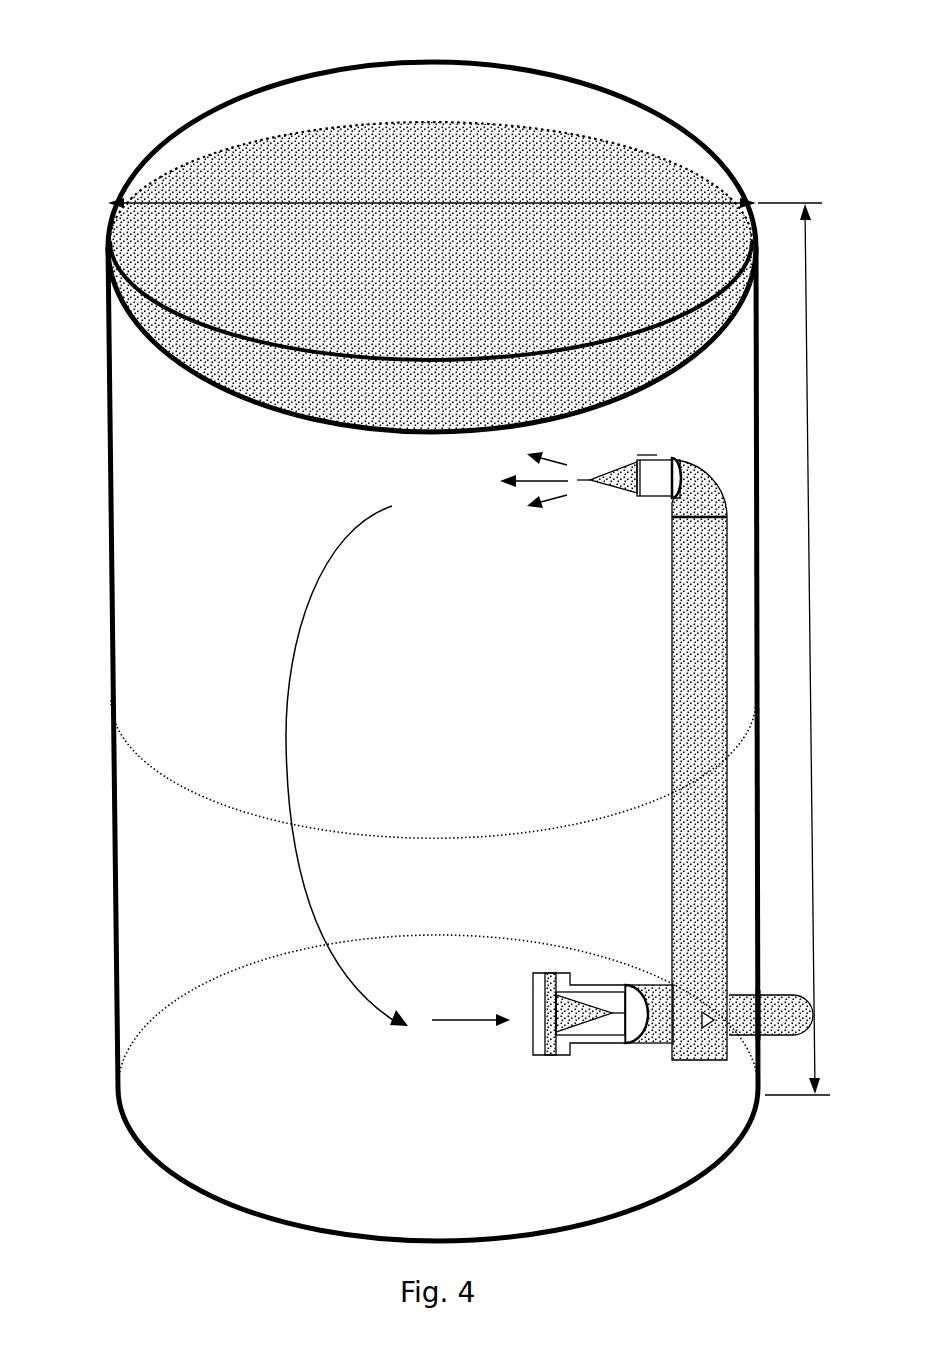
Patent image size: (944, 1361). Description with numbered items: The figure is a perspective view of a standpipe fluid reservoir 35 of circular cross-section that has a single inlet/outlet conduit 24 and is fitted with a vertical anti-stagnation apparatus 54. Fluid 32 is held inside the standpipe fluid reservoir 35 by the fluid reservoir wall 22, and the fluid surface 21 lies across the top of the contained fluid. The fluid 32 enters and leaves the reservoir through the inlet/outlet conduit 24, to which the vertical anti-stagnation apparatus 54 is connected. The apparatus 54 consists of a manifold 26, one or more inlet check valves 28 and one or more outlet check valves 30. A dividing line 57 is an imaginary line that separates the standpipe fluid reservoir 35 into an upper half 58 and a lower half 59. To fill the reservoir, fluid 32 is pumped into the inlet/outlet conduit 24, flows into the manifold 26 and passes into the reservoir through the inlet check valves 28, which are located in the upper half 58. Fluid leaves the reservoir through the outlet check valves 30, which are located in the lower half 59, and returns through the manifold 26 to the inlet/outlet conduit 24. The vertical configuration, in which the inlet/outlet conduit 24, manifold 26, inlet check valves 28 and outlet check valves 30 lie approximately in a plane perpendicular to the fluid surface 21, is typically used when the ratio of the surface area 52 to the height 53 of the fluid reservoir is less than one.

The standpipe fluid reservoir 35 is at (214, 38).
The fluid reservoir wall 22 is at (110, 522).
The fluid surface 21 is at (534, 287).
The surface area 52 is at (432, 204).
The height 53 is at (804, 649).
The dividing line 57 is at (238, 796).
The upper half 58 is at (189, 694).
The lower half 59 is at (189, 854).
The fluid 32 is at (436, 721).
The manifold 26 is at (714, 794).
The inlet check valve 28 is at (643, 481).
The outlet check valve 30 is at (538, 1036).
The inlet/outlet conduit 24 is at (782, 1020).
The vertical anti-stagnation apparatus 54 is at (648, 728).